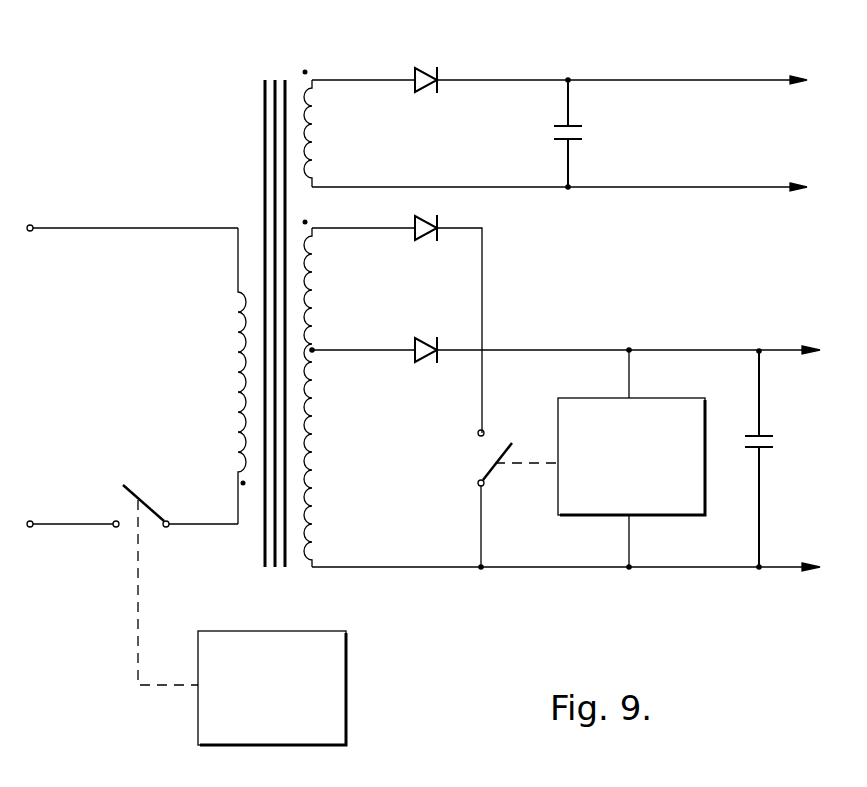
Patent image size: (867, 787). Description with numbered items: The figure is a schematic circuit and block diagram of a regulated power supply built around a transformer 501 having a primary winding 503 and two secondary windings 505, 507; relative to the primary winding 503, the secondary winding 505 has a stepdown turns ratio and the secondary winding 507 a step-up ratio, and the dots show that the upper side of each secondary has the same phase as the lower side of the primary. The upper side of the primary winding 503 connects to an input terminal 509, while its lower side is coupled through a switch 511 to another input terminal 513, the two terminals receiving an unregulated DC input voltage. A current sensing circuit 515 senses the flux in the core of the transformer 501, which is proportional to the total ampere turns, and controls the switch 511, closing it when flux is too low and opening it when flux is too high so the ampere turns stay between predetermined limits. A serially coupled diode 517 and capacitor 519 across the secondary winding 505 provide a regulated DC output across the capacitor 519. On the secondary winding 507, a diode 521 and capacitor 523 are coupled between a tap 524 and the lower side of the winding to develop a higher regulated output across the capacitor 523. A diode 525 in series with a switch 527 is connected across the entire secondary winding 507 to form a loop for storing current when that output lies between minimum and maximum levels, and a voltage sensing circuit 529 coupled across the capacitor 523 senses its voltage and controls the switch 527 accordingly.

The transformer 501 is at (262, 100).
The primary winding 503 is at (232, 370).
The secondary winding 505 is at (322, 122).
The secondary winding 507 is at (322, 430).
The input terminal 509 is at (32, 225).
The switch 511 is at (143, 502).
The input terminal 513 is at (30, 520).
The current sensing circuit 515 is at (343, 743).
The diode 517 is at (419, 66).
The capacitor 519 is at (578, 141).
The diode 521 is at (416, 338).
The capacitor 523 is at (767, 433).
The tap 524 is at (316, 354).
The diode 525 is at (414, 238).
The switch 527 is at (492, 462).
The voltage sensing circuit 529 is at (697, 404).